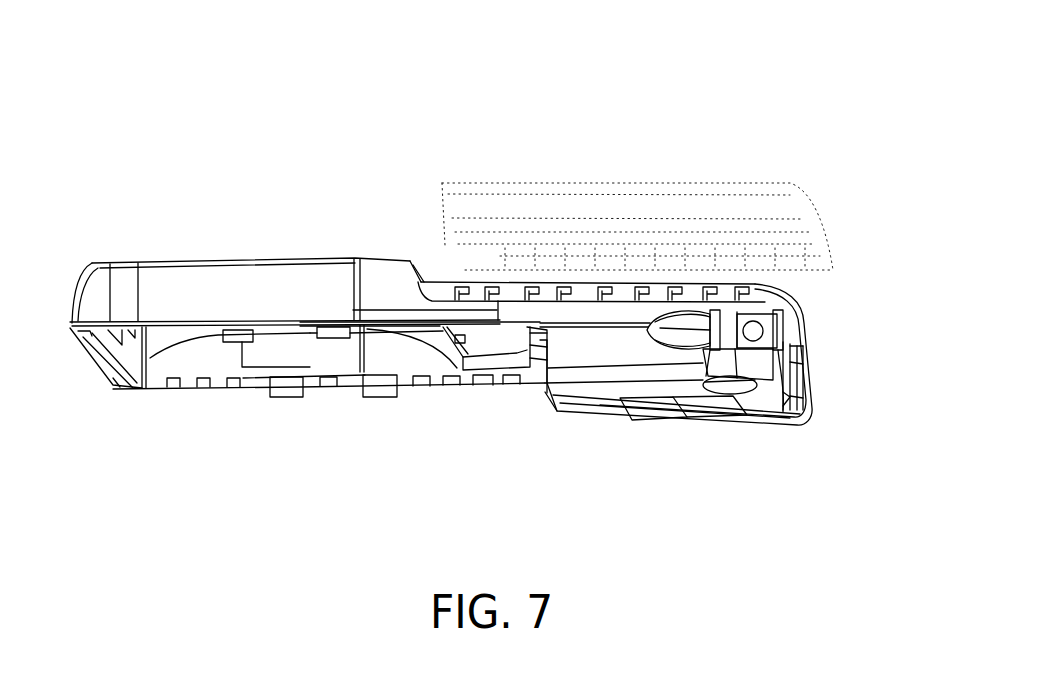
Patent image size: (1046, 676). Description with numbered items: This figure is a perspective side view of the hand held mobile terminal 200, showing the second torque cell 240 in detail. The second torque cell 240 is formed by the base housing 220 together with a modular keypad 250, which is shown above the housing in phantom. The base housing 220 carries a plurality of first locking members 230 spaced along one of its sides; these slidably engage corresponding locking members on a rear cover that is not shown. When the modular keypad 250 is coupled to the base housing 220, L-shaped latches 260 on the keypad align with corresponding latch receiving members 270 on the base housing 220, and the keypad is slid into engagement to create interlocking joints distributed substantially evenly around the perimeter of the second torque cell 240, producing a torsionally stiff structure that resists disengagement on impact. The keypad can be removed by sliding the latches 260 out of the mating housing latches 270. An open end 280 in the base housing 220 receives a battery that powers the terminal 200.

The mobile terminal 200 is at (301, 86).
The base housing 220 is at (656, 412).
The first locking members 230 is at (492, 402).
The second torque cell 240 is at (808, 290).
The modular keypad 250 is at (684, 150).
The latches 260 is at (786, 265).
The latch receiving members 270 is at (483, 283).
The open end 280 is at (802, 381).